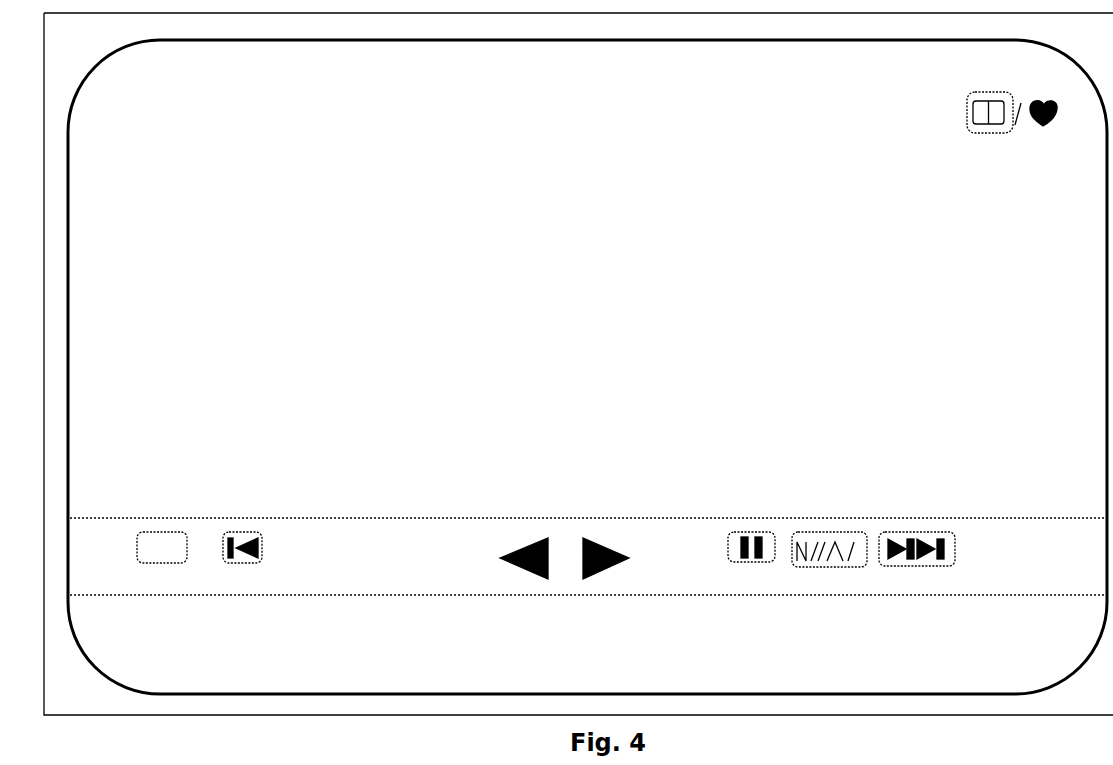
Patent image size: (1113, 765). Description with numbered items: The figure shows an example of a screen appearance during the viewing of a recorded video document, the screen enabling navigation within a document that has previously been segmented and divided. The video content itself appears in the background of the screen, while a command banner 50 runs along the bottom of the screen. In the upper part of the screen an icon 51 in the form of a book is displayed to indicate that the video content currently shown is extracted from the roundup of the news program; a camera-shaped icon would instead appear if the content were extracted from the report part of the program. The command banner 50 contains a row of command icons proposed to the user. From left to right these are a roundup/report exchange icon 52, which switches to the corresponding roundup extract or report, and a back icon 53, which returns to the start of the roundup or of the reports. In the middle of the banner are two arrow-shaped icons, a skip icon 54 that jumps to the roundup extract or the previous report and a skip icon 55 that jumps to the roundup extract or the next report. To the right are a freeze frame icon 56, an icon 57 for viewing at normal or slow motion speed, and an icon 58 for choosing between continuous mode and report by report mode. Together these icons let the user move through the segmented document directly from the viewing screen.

The command banner 50 is at (1005, 545).
The icon in the form of a book 51 is at (970, 117).
The roundup/report exchange icon 52 is at (149, 551).
The back to start icon 53 is at (240, 535).
The skip to previous icon 54 is at (526, 546).
The skip to next icon 55 is at (606, 544).
The freeze frame icon 56 is at (753, 535).
The normal/slow motion speed icon 57 is at (814, 558).
The continuous/report by report mode icon 58 is at (928, 542).